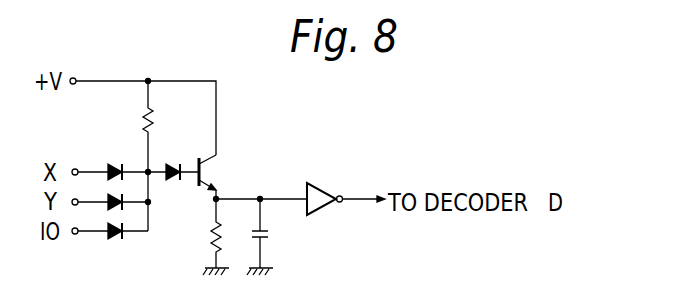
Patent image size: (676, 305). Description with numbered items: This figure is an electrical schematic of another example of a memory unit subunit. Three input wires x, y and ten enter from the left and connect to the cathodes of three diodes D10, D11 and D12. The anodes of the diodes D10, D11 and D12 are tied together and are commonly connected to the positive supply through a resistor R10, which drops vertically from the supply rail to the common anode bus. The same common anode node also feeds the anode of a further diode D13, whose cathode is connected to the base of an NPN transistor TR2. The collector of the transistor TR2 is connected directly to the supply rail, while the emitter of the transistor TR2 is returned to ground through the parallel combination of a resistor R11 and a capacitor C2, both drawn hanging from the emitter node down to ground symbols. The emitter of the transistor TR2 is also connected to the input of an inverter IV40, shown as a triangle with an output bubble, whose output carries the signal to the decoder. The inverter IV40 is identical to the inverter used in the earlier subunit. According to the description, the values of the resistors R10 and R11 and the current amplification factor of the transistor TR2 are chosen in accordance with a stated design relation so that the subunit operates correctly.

The diode D10 is at (118, 162).
The diode D11 is at (110, 196).
The diode D12 is at (110, 226).
The diode D13 is at (172, 181).
The resistor R10 is at (153, 120).
The resistor R11 is at (212, 240).
The NPN transistor TR2 is at (226, 177).
The capacitor C2 is at (270, 235).
The inverter IV40 is at (320, 211).